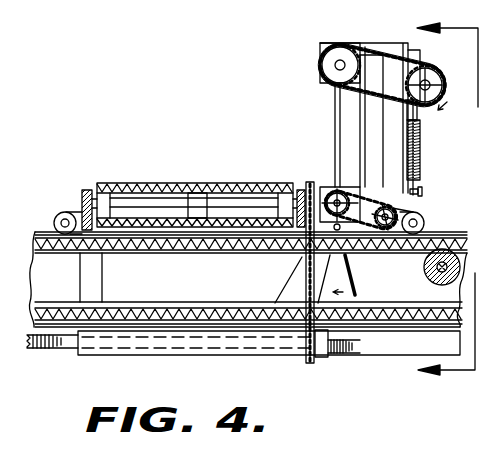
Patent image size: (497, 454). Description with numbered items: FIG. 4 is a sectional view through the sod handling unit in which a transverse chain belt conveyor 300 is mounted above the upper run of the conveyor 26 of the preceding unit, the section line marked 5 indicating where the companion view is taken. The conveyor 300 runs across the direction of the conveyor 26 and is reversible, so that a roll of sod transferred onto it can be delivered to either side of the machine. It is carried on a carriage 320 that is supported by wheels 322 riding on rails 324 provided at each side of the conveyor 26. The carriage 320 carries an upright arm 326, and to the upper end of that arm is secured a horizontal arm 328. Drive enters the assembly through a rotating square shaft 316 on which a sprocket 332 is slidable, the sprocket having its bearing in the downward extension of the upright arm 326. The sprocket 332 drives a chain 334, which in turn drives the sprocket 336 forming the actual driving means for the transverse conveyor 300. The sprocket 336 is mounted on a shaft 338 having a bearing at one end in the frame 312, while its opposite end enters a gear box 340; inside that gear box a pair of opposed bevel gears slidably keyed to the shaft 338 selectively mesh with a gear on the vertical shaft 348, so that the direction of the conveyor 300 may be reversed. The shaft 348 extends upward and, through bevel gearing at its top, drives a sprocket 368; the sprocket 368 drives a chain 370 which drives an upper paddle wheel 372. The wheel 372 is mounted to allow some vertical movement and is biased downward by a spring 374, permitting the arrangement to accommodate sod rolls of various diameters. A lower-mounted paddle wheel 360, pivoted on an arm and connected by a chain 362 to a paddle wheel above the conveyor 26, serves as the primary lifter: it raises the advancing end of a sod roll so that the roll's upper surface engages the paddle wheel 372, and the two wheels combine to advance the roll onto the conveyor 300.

The section line 5- 5 is at (447, 211).
The conveyor 26 is at (32, 253).
The chain belt conveyor 300 is at (157, 183).
The frame 312 is at (80, 196).
The rotating square shaft 316 is at (388, 351).
The carriage 320 is at (371, 193).
The wheels 322 is at (424, 215).
The rails 324 is at (442, 233).
The upright arm 326 is at (400, 50).
The horizontal arm 328 is at (372, 47).
The sprocket 332 is at (313, 364).
The chain 334 is at (306, 275).
The sprocket 336 is at (307, 184).
The shaft 338 is at (226, 201).
The gear box 340 is at (331, 186).
The shaft 348 is at (334, 104).
The paddle wheel 360 is at (386, 228).
The chain 362 is at (378, 206).
The sprocket 368 is at (324, 70).
The chain 370 is at (373, 95).
The upper paddle wheel 372 is at (440, 80).
The spring 374 is at (421, 137).